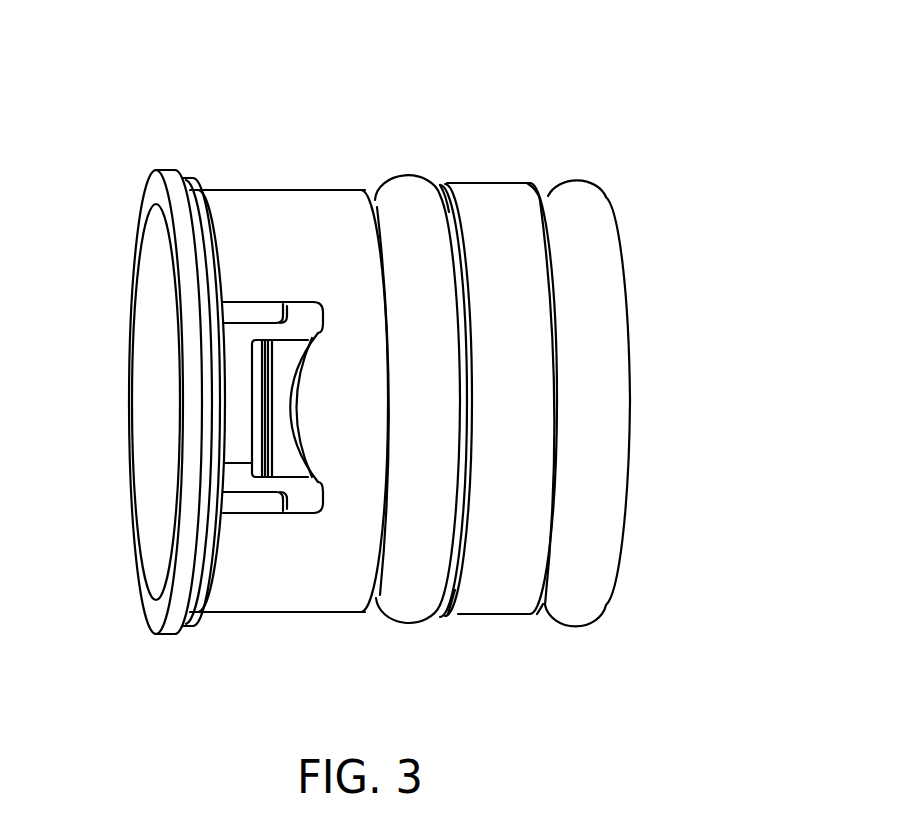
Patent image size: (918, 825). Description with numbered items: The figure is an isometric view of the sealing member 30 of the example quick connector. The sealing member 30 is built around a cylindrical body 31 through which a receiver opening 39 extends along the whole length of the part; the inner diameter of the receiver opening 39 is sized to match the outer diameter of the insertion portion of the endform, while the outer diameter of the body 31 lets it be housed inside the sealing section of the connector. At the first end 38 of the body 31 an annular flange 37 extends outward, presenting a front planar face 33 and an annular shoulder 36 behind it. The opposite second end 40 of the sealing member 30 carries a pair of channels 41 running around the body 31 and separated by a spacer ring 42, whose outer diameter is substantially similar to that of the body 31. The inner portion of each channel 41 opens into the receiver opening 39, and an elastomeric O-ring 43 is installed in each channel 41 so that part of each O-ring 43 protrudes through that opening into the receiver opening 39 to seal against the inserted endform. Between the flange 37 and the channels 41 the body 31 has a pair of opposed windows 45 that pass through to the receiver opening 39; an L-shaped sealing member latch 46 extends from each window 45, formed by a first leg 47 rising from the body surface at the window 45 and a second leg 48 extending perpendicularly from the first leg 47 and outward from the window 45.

The sealing member 30 is at (255, 66).
The cylindrical body 31 is at (330, 189).
The front planar face 33 is at (150, 190).
The annular shoulder 36 is at (191, 186).
The annular flange 37 is at (135, 402).
The first end 38 is at (206, 638).
The receiver opening 39 is at (143, 350).
The second end 40 is at (575, 108).
The channels 41 is at (540, 198).
The spacer ring 42 is at (505, 600).
The O-rings 43 is at (403, 173).
The windows 45 is at (187, 402).
The sealing member latch 46 is at (292, 350).
The first leg 47 is at (283, 407).
The second leg 48 is at (270, 452).